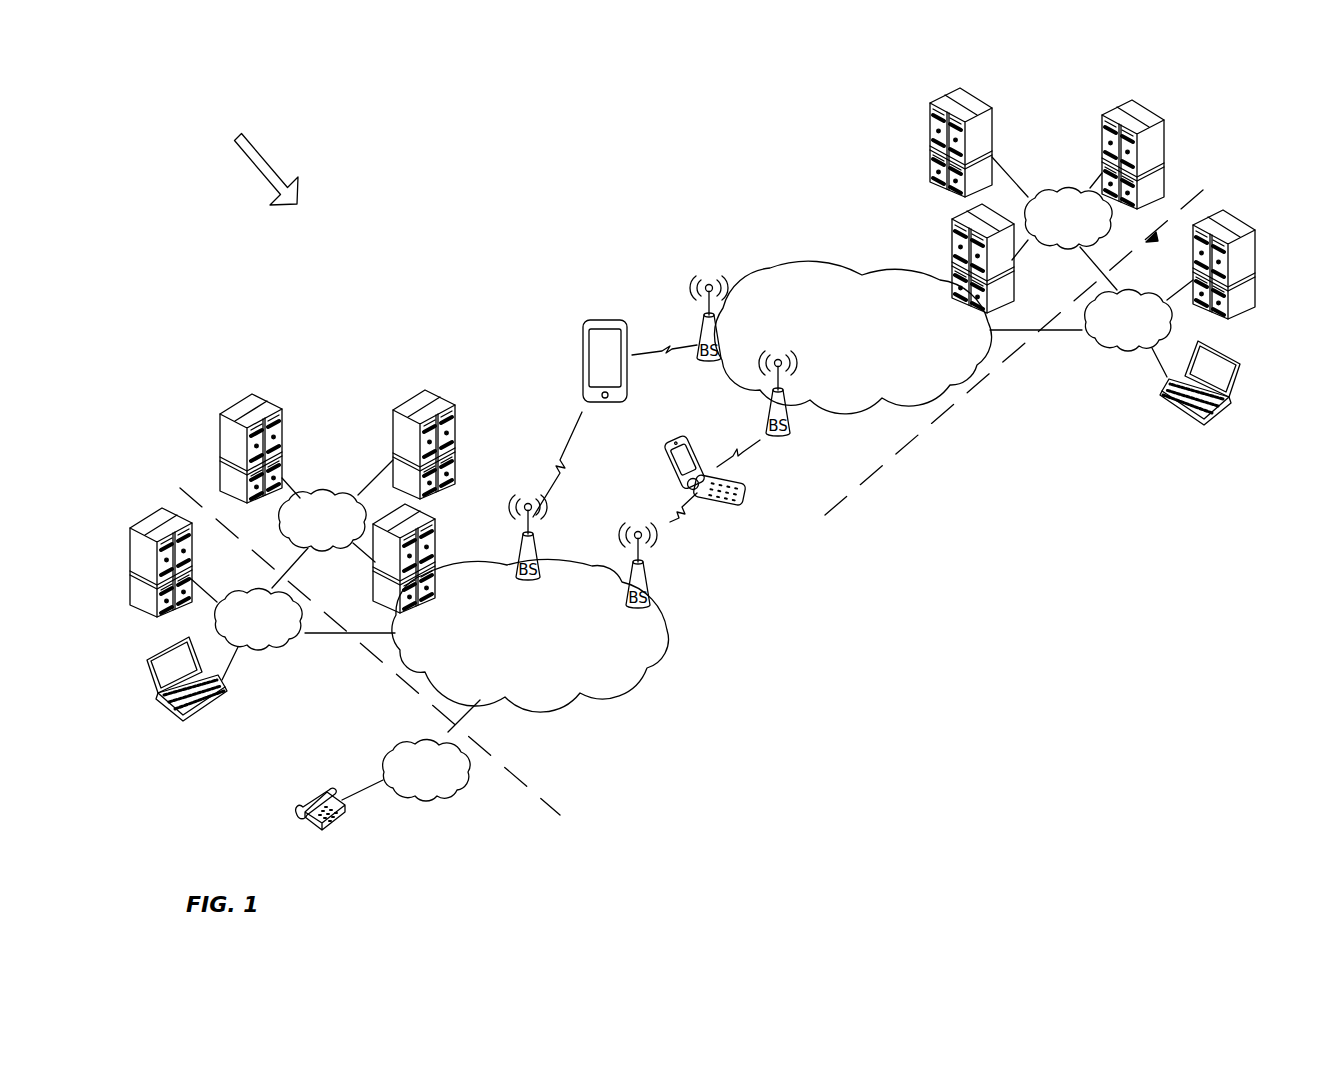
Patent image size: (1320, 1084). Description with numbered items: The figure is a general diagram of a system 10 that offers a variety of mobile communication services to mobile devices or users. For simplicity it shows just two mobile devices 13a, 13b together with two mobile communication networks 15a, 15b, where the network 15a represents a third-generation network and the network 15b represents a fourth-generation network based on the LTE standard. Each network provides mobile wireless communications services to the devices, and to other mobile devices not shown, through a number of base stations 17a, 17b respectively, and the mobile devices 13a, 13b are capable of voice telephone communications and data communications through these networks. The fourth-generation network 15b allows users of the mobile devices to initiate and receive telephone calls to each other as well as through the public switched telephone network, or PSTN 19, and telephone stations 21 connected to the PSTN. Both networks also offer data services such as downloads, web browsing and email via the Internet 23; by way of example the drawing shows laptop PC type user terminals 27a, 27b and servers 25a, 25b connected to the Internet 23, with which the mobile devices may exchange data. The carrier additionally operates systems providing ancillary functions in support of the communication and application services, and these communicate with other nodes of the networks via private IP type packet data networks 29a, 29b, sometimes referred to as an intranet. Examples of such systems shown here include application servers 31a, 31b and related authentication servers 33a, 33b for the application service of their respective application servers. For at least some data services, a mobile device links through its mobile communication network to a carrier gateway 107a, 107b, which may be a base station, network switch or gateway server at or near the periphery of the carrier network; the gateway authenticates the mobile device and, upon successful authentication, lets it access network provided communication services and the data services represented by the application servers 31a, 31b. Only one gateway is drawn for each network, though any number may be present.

The system 10 is at (257, 162).
The mobile device 13a is at (583, 346).
The mobile device 13b is at (672, 460).
The mobile communication network 15a is at (797, 260).
The mobile communication network 15b is at (617, 563).
The base station 17a is at (698, 332).
The base station 17b is at (538, 545).
The public switched telephone network (PSTN) 19 is at (380, 762).
The telephone station 21 is at (350, 825).
The Internet 23 is at (258, 645).
The server 25a is at (1195, 265).
The server 25b is at (196, 568).
The laptop PC type user terminal 27a is at (1173, 400).
The laptop PC type user terminal 27b is at (213, 710).
The private IP type packet data network 29a is at (1113, 228).
The private IP type packet data network 29b is at (280, 535).
The application server 31a is at (993, 118).
The application server 31b is at (395, 411).
The authentication server 33a is at (1170, 155).
The authentication server 33b is at (222, 454).
The carrier gateway 107a is at (952, 238).
The carrier gateway 107b is at (458, 533).